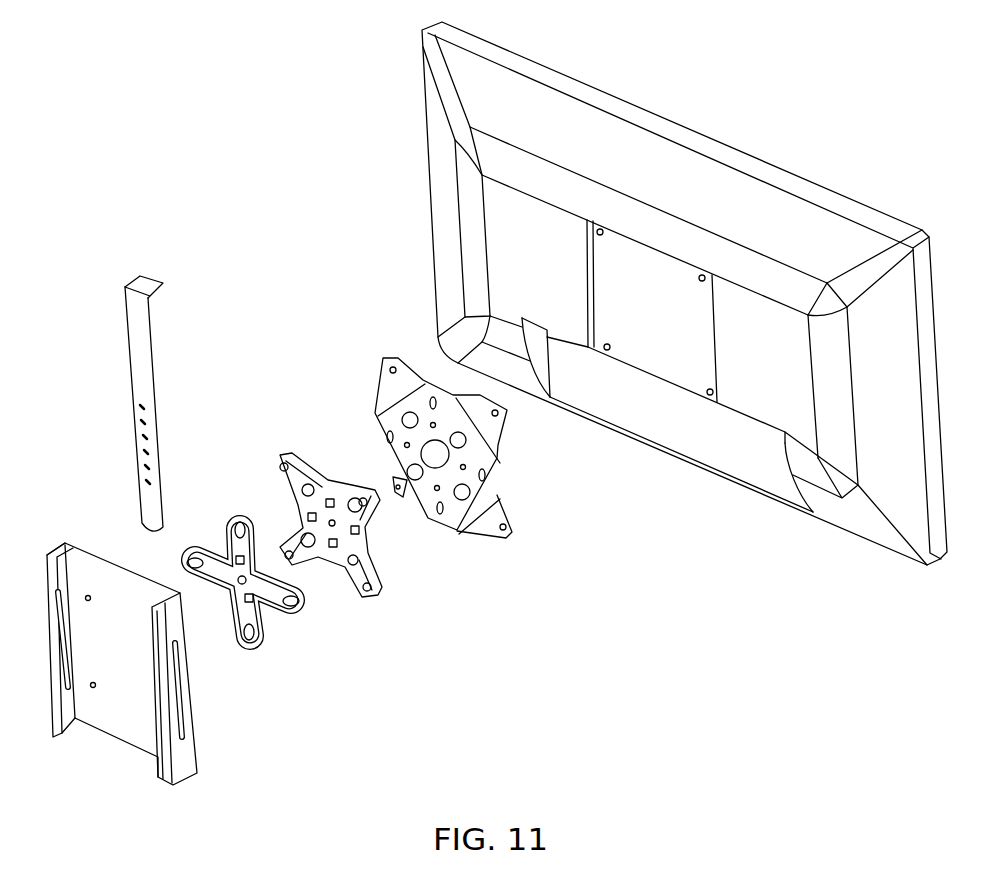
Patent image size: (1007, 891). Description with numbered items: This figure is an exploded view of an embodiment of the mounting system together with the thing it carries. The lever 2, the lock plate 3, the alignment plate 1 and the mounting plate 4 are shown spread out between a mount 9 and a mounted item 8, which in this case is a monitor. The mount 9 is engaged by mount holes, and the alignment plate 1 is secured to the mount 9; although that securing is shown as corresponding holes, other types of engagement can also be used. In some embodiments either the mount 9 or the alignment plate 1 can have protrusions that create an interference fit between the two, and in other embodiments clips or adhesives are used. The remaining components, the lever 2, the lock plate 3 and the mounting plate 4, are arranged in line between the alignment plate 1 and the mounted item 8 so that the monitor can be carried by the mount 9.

The alignment plate 1 is at (375, 597).
The lever 2 is at (128, 348).
The lock plate 3 is at (258, 648).
The mounting plate 4 is at (512, 535).
The mounted item 8 is at (820, 135).
The mount 9 is at (120, 720).